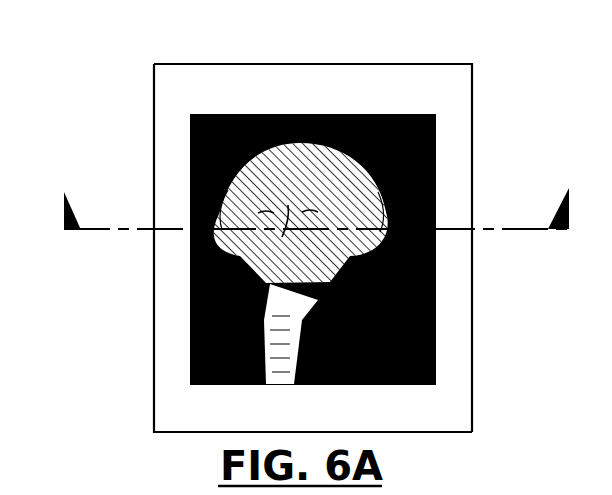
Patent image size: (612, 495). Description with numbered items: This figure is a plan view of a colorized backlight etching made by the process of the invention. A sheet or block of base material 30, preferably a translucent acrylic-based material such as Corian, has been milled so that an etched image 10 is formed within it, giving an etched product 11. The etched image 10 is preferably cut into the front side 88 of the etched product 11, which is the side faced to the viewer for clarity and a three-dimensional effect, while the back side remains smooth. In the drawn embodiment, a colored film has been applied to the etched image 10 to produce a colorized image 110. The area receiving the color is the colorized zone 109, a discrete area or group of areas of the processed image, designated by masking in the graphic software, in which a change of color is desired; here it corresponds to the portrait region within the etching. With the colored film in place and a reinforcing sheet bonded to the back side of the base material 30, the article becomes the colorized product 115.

The etched product 11 is at (137, 87).
The colorized product 115 is at (100, 149).
The etched image 10 is at (436, 145).
The colorized image 110 is at (436, 192).
The colorized zone 109 is at (323, 116).
The base material 30 is at (173, 283).
The front side 88 is at (173, 400).